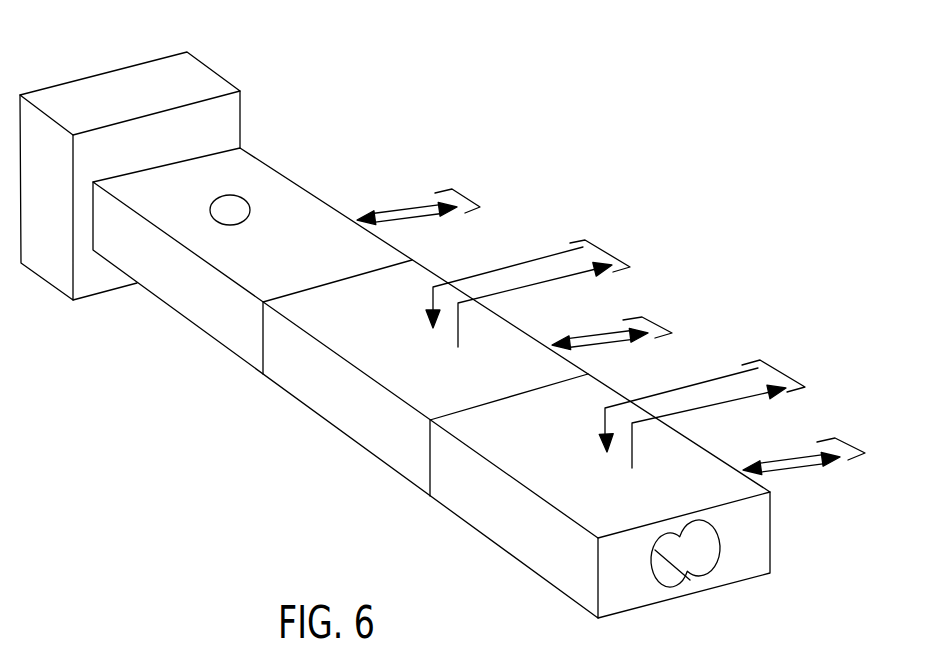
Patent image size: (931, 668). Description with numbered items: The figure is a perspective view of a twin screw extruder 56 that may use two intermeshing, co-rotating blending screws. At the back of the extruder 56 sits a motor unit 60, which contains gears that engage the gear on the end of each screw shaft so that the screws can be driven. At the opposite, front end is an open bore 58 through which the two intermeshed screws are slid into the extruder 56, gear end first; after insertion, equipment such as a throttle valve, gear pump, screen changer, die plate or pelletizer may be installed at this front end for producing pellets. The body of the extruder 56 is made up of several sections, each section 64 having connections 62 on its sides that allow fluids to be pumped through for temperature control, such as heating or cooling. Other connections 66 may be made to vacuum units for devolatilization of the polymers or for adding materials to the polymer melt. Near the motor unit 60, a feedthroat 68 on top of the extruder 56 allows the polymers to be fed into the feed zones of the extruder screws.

The twin screw extruder 56 is at (458, 324).
The open bore 58 is at (722, 542).
The motor unit 60 is at (205, 62).
The connections 62 is at (464, 197).
The section 64 is at (337, 428).
The other connections 66 is at (602, 249).
The feedthroat 68 is at (237, 195).